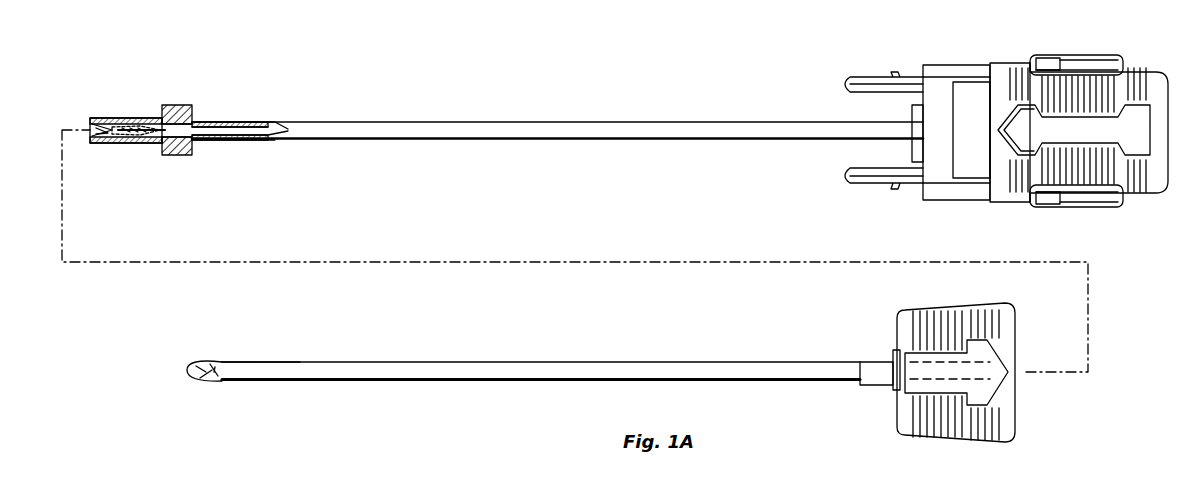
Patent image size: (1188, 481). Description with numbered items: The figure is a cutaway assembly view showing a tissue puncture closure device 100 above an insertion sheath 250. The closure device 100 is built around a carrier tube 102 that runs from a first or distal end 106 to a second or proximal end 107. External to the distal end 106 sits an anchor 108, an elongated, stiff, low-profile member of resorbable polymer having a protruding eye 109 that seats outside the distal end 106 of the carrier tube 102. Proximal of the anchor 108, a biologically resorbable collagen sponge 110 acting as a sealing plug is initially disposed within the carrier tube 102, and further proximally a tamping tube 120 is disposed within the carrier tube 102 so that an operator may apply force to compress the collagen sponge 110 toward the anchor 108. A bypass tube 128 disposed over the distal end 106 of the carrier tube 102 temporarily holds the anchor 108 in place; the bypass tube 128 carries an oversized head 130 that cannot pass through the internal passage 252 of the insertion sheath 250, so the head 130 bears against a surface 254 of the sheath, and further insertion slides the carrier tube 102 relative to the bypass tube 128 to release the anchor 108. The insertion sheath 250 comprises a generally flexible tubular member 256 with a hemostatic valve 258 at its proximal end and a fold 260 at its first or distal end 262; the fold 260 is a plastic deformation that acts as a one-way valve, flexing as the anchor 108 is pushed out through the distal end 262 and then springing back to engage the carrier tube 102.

The tissue puncture closure device 100 is at (500, 98).
The carrier tube 102 is at (510, 140).
The distal end 106 is at (133, 137).
The proximal end 107 is at (1000, 163).
The anchor 108 is at (113, 140).
The protruding eye 109 is at (98, 130).
The collagen sponge 110 is at (150, 122).
The tamping tube 120 is at (232, 128).
The bypass tube 128 is at (115, 118).
The oversized head 130 is at (177, 107).
The insertion sheath 250 is at (316, 356).
The internal passage 252 is at (988, 378).
The surface 254 is at (1015, 337).
The tubular member 256 is at (390, 368).
The hemostatic valve 258 is at (937, 320).
The fold 260 is at (215, 381).
The distal end 262 is at (253, 372).